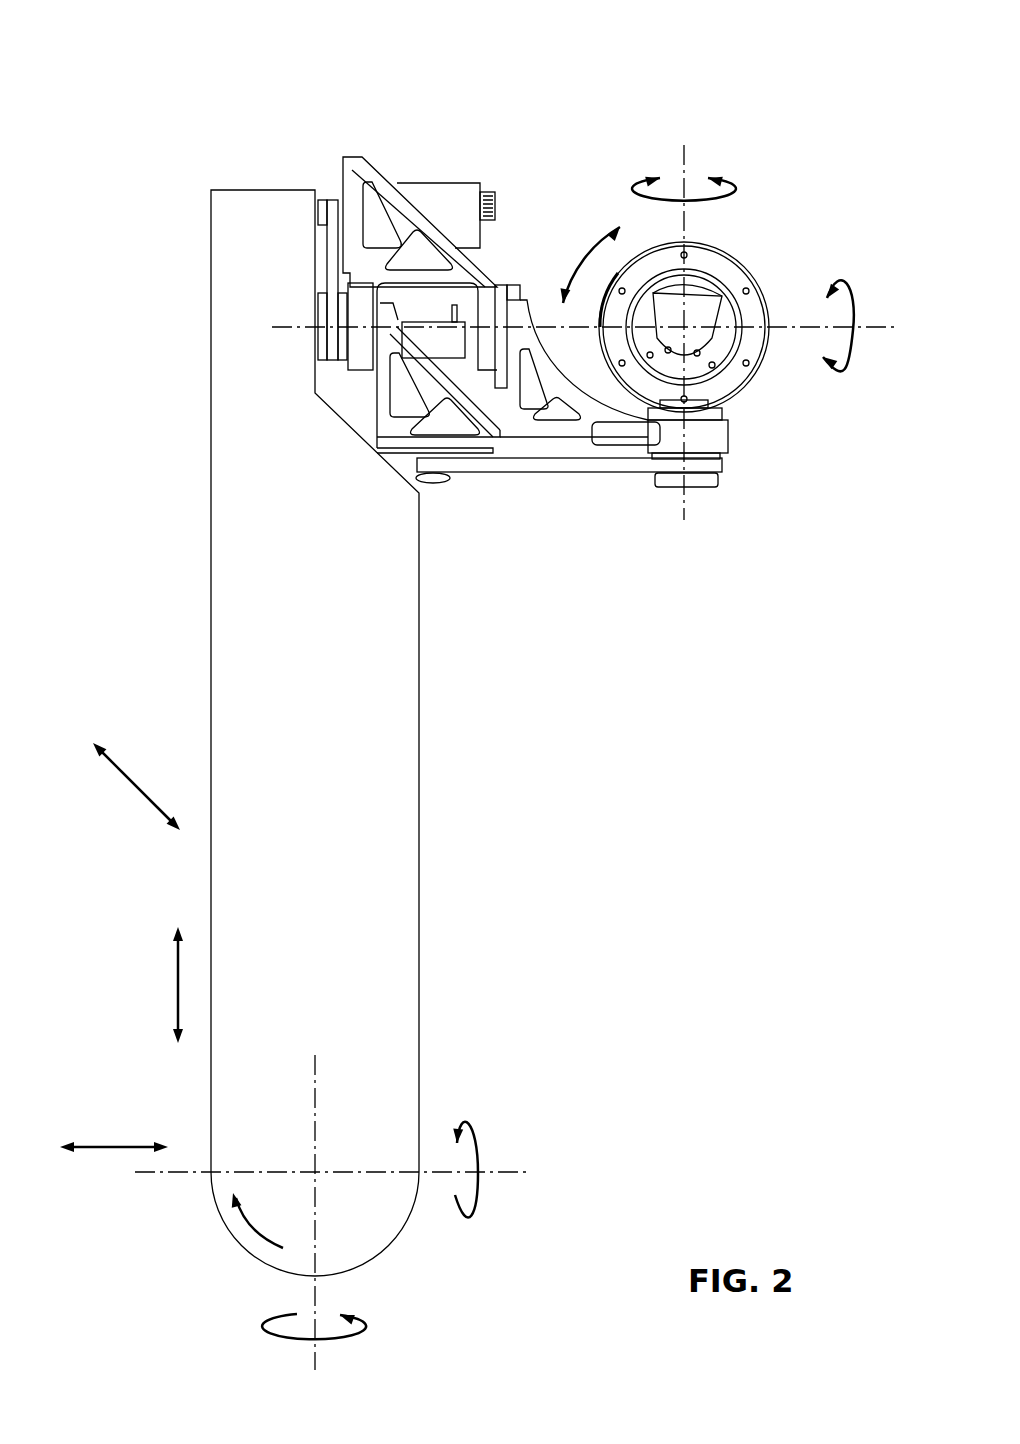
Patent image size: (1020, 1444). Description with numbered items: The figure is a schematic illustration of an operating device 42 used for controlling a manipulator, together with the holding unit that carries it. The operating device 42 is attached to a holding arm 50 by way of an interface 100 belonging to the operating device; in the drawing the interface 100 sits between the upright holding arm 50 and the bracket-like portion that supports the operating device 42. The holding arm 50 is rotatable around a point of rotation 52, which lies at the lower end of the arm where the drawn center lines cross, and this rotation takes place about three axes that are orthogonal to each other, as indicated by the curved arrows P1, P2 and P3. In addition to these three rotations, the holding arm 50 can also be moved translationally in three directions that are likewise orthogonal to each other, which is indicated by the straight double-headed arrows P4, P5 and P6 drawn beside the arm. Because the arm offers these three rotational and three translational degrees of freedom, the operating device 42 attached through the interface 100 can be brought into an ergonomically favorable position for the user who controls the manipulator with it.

The holding arm 50 is at (223, 157).
The interface 100 is at (320, 158).
The operating device 42 is at (385, 122).
The point of rotation 52 is at (317, 1173).
The arrow P1 is at (350, 1333).
The arrow P2 is at (252, 1237).
The arrow P3 is at (478, 1193).
The arrow P4 is at (130, 783).
The arrow P5 is at (122, 1143).
The arrow P6 is at (175, 988).